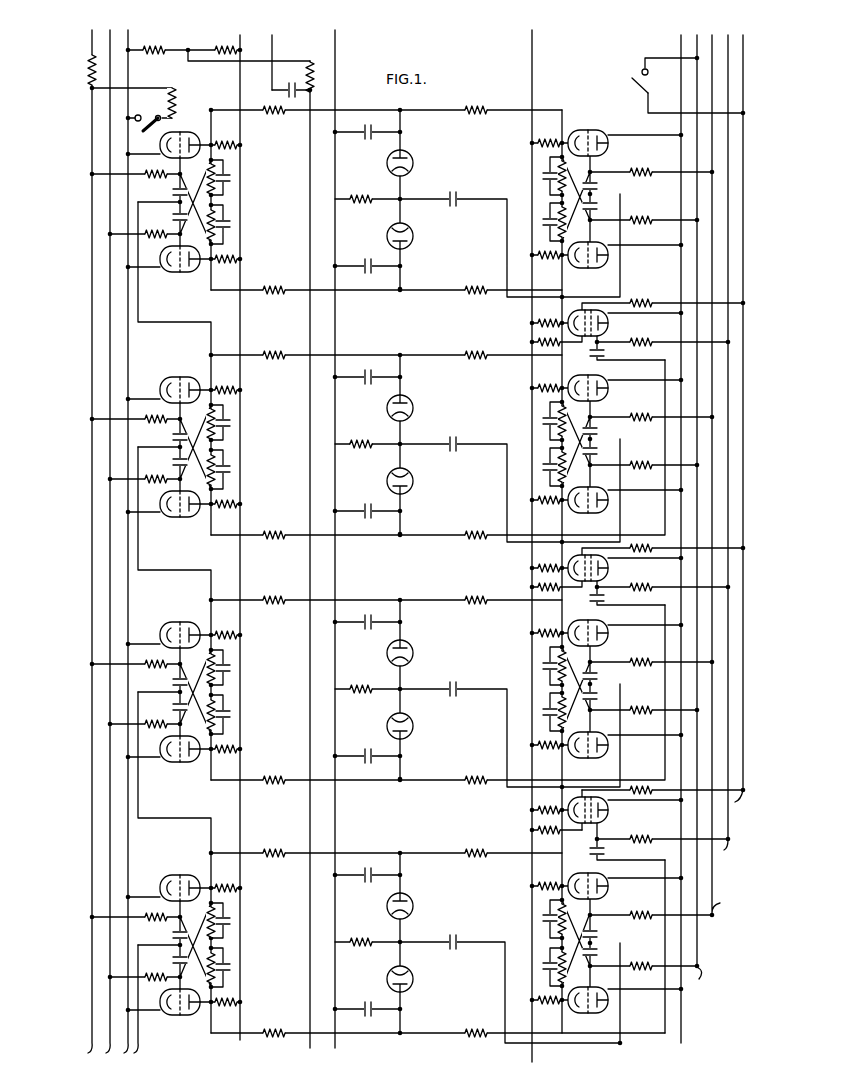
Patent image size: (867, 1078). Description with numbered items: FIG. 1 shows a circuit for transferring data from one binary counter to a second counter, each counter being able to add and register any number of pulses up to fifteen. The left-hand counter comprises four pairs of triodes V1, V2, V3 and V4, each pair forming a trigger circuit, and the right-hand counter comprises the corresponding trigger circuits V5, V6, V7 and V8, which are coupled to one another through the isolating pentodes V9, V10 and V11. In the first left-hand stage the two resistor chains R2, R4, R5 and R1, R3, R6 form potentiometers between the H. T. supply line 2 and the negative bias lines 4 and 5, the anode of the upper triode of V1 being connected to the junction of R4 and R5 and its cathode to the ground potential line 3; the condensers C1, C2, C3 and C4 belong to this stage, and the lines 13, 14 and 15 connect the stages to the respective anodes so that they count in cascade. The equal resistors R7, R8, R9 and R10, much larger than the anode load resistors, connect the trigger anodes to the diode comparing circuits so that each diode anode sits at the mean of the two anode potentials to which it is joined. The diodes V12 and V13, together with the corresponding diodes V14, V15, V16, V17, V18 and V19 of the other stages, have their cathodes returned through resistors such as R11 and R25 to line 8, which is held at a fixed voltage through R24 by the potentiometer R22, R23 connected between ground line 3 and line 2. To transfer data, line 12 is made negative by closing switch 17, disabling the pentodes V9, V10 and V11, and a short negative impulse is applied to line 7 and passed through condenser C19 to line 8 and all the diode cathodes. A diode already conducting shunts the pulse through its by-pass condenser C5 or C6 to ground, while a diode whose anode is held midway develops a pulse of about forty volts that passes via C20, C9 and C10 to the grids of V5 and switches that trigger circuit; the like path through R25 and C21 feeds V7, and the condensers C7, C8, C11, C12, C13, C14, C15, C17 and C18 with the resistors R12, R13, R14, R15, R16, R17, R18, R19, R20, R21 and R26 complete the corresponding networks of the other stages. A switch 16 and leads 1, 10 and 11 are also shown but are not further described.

The input lead 1 is at (144, 1006).
The H. T. supply line 2 is at (240, 1040).
The ground potential line 3 is at (343, 326).
The negative bias line 4 is at (406, 548).
The negative bias line 5 is at (733, 895).
The line 7 is at (272, 47).
The line 8 is at (310, 336).
The output lead 10 is at (620, 1043).
The lead 11 is at (729, 448).
The line 12 is at (739, 427).
The line 13 is at (140, 815).
The line 14 is at (140, 570).
The line 15 is at (140, 312).
The switch 16 is at (151, 116).
The switch 17 is at (636, 89).
The pair of triodes V1 is at (194, 945).
The pair of triodes V2 is at (195, 692).
The pair of triodes V3 is at (195, 447).
The pair of triodes V4 is at (196, 202).
The trigger circuit V5 is at (572, 943).
The trigger circuit V6 is at (574, 689).
The trigger circuit V7 is at (573, 444).
The trigger circuit V8 is at (573, 199).
The coupling pentode V9 is at (608, 815).
The coupling pentode V10 is at (609, 572).
The coupling pentode V11 is at (609, 327).
The diode V12 is at (413, 985).
The diode V13 is at (413, 900).
The diode V14 is at (413, 730).
The diode V15 is at (413, 655).
The diode V16 is at (413, 486).
The diode V17 is at (413, 410).
The diode V18 is at (413, 240).
The diode V19 is at (413, 168).
The resistor R1 is at (156, 915).
The resistor R2 is at (161, 980).
The resistor R3 is at (223, 960).
The resistor R4 is at (222, 906).
The resistor R5 is at (220, 879).
The resistor R6 is at (235, 1004).
The resistor R7 is at (273, 1032).
The resistor R8 is at (286, 857).
The resistor R9 is at (484, 853).
The resistor R10 is at (466, 1032).
The resistor R11 is at (357, 950).
The resistor R12 is at (534, 1005).
The resistor R13 is at (550, 877).
The resistor R14 is at (548, 907).
The resistor R15 is at (556, 965).
The resistor R16 is at (620, 912).
The resistor R17 is at (638, 963).
The resistor R18 is at (641, 842).
The resistor R19 is at (538, 830).
The resistor R20 is at (536, 810).
The resistor R21 is at (640, 788).
The resistor R22 is at (141, 48).
The resistor R23 is at (214, 44).
The resistor R24 is at (311, 78).
The resistor R25 is at (376, 438).
The resistor R26 is at (178, 100).
The capacitor C1 is at (173, 958).
The capacitor C2 is at (173, 935).
The capacitor C3 is at (232, 922).
The capacitor C4 is at (230, 974).
The condenser C5 is at (364, 880).
The condenser C6 is at (365, 1010).
The capacitor C7 is at (548, 976).
The capacitor C8 is at (544, 921).
The condenser C9 is at (598, 934).
The condenser C10 is at (599, 952).
The capacitor C11 is at (591, 853).
The capacitor C12 is at (599, 699).
The capacitor C13 is at (598, 677).
The capacitor C14 is at (172, 683).
The capacitor C15 is at (173, 707).
The capacitor C17 is at (366, 508).
The capacitor C18 is at (365, 384).
The condenser C19 is at (273, 78).
The condenser C20 is at (448, 940).
The condenser C21 is at (458, 450).